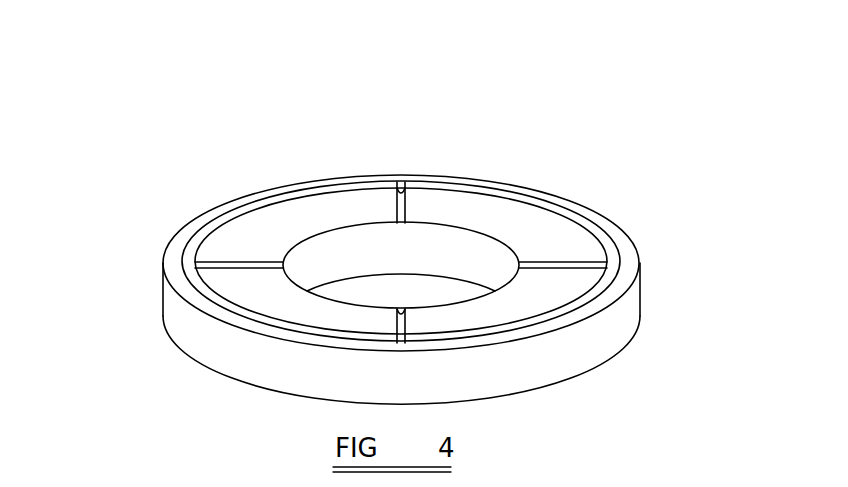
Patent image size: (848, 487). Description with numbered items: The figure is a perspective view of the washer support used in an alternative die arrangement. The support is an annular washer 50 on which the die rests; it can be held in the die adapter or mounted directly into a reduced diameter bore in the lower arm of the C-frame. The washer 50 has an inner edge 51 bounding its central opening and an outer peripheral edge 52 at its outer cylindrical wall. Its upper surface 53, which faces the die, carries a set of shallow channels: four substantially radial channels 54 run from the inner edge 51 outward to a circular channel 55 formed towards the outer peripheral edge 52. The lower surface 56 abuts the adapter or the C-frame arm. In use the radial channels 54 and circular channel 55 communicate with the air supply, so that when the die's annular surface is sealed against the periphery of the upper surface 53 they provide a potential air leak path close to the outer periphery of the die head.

The annular washer 50 is at (420, 243).
The inner edge 51 is at (350, 240).
The outer peripheral edge 52 is at (355, 367).
The upper surface 53 is at (180, 258).
The radial channels 54 is at (240, 267).
The circular channel 55 is at (603, 287).
The lower surface 56 is at (233, 378).